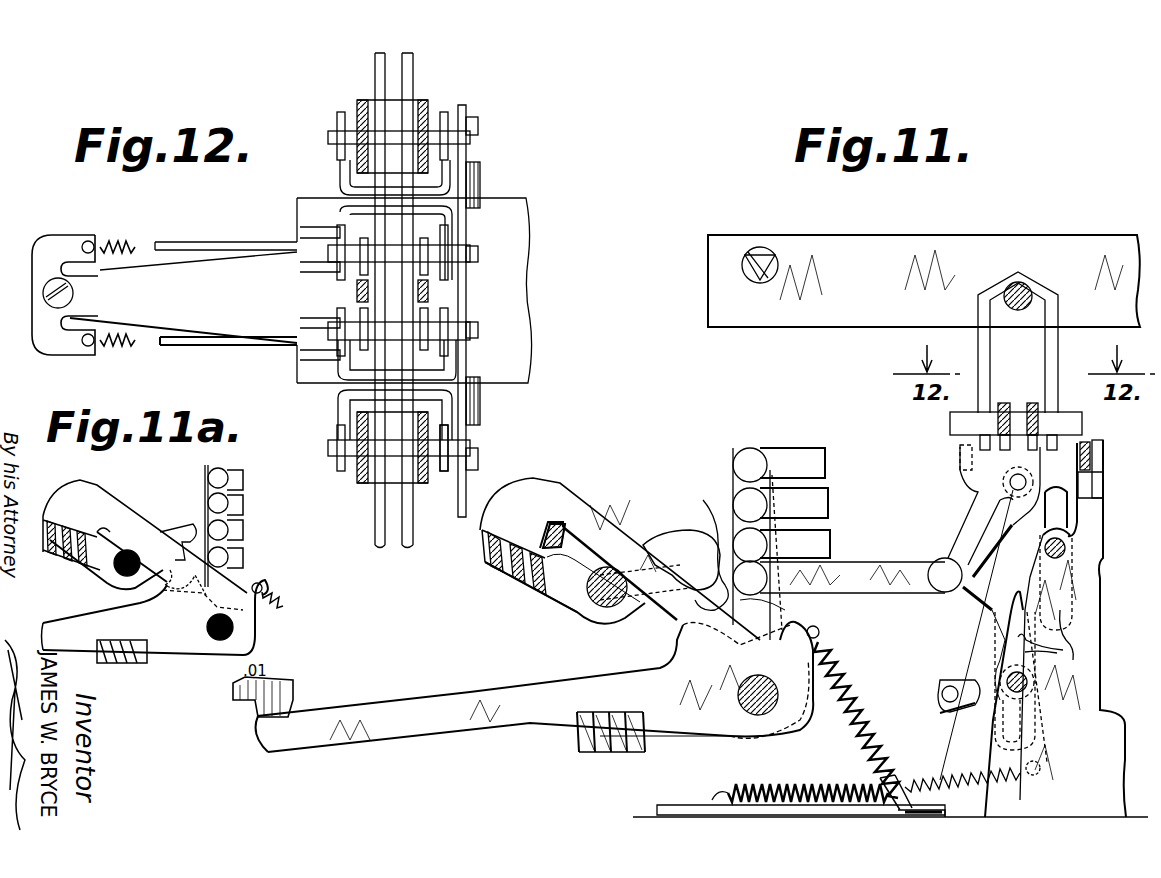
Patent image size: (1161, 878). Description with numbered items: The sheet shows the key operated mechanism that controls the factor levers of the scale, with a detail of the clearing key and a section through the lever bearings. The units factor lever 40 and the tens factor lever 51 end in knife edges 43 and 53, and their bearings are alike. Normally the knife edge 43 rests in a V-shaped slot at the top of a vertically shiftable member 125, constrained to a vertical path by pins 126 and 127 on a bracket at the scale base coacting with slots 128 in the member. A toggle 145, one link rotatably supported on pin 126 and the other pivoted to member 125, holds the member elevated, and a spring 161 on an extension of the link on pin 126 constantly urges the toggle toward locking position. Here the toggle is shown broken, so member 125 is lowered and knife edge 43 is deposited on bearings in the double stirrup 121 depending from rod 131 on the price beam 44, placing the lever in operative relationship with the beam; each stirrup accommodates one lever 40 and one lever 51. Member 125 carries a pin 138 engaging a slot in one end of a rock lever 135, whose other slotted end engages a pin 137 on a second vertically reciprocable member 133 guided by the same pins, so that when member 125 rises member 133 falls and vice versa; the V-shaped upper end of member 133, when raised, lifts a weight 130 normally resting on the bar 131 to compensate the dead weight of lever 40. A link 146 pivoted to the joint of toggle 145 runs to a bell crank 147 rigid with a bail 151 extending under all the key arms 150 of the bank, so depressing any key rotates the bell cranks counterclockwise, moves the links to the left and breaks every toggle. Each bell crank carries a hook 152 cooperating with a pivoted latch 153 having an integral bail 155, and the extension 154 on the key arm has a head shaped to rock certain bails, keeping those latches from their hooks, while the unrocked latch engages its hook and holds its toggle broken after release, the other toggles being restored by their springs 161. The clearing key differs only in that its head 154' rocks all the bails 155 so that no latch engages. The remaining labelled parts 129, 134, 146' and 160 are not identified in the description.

In FIG. 12, the factor lever 40 is at (414, 512).
In FIG. 11, the factor lever 40 is at (1005, 405).
In FIG. 11, the knife edge 43 is at (1084, 425).
In FIG. 11, the price beam 44 is at (955, 242).
In FIG. 12, the factor lever 51 is at (412, 77).
In FIG. 12, the knife edge 53 is at (350, 252).
In FIG. 12, the double stirrup 121 is at (530, 288).
In FIG. 11, the double stirrup 121 is at (1058, 348).
In FIG. 11, the vertically shiftable member 125 is at (978, 490).
In FIG. 11, the pin 126 is at (1030, 684).
In FIG. 11, the pin 127 is at (1063, 558).
In FIG. 11, the slots 128 is at (1060, 655).
In FIG. 11, the stud 129 is at (978, 440).
In FIG. 12, the weight 130 is at (430, 480).
In FIG. 11, the rod 131 is at (1030, 290).
In FIG. 12, the member 133 is at (455, 407).
In FIG. 12, the bracket 134 is at (430, 365).
In FIG. 11, the rock lever 135 is at (1092, 462).
In FIG. 12, the pin 137 is at (478, 458).
In FIG. 12, the pin 138 is at (478, 330).
In FIG. 11, the pin 138 is at (1103, 487).
In FIG. 12, the toggle 145 is at (362, 352).
In FIG. 11, the toggle 145 is at (985, 578).
In FIG. 12, the link 146 is at (183, 342).
In FIG. 11, the link 146 is at (847, 566).
In FIG. 12, the link arm 146' is at (198, 238).
In FIG. 11A, the bell crank 147 is at (163, 652).
In FIG. 11, the key arm 150 is at (510, 722).
In FIG. 11A, the key arm 150 is at (82, 620).
In FIG. 11, the bail 151 is at (622, 748).
In FIG. 11, the hook 152 is at (685, 605).
In FIG. 11, the latch 153 is at (713, 530).
In FIG. 11A, the latch 153 is at (170, 530).
In FIG. 11, the extension 154 is at (620, 550).
In FIG. 11A, the head 154' is at (145, 531).
In FIG. 11, the bail 155 is at (532, 568).
In FIG. 11A, the bail 155 is at (70, 565).
In FIG. 11, the spring 160 is at (840, 672).
In FIG. 11A, the spring 160 is at (270, 600).
In FIG. 12, the spring 161 is at (128, 343).
In FIG. 11, the spring 161 is at (818, 795).